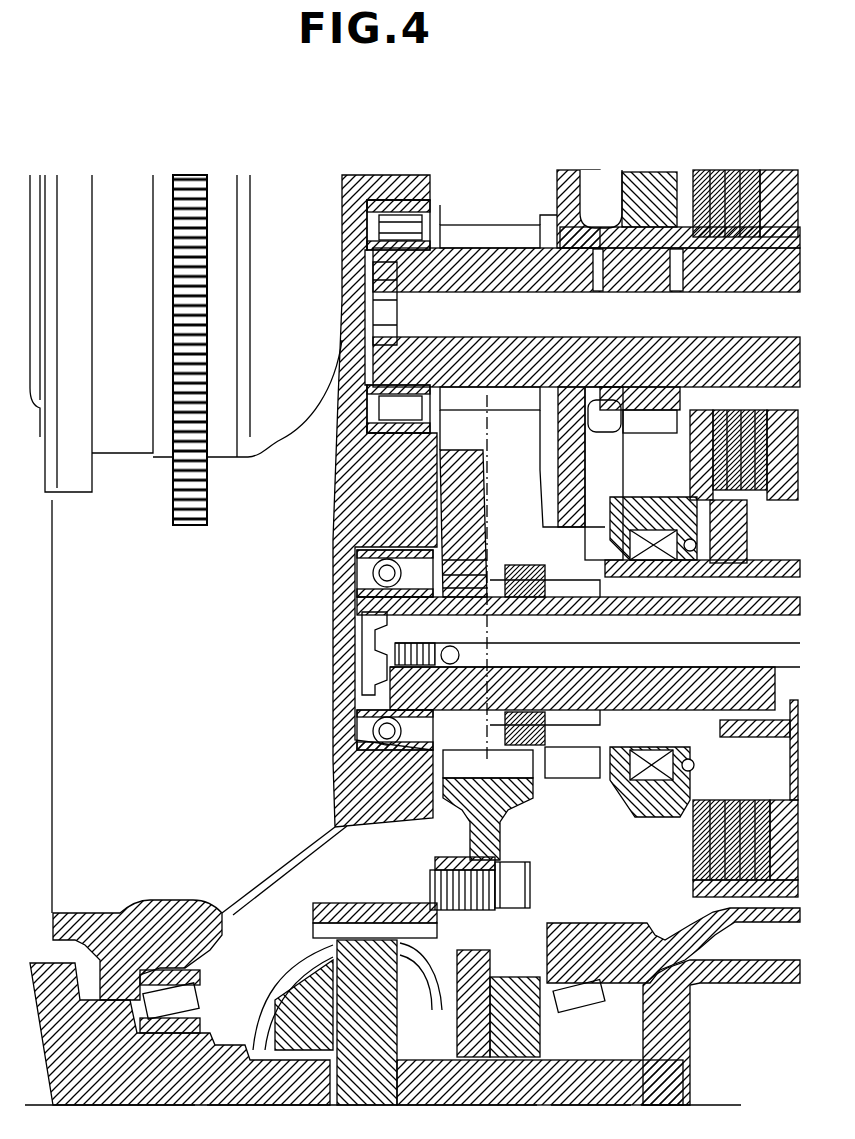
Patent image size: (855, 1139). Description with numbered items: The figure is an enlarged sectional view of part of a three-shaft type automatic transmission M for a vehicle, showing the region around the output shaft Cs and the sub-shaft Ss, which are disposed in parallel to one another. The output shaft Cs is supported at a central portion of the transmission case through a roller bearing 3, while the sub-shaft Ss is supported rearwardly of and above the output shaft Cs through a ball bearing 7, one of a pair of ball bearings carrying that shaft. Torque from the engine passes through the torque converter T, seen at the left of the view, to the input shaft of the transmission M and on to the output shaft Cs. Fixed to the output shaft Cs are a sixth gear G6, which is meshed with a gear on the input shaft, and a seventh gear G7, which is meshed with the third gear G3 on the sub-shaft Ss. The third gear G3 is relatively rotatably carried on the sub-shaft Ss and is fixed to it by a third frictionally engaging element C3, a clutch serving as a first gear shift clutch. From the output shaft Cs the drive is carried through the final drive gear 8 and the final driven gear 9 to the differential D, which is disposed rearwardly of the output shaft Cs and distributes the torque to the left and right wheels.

The automatic transmission M is at (478, 141).
The torque converter T is at (238, 497).
The roller bearing 3 is at (407, 227).
The output shaft Cs is at (522, 262).
The final drive gear 8 is at (513, 402).
The seventh gear G7 is at (560, 468).
The sixth gear G6 is at (627, 428).
The third frictionally engaging element C3 is at (690, 453).
The sub-shaft Ss is at (533, 567).
The ball bearing 7 is at (372, 570).
The final driven gear 9 is at (523, 790).
The third gear G3 is at (577, 765).
The differential D is at (537, 932).